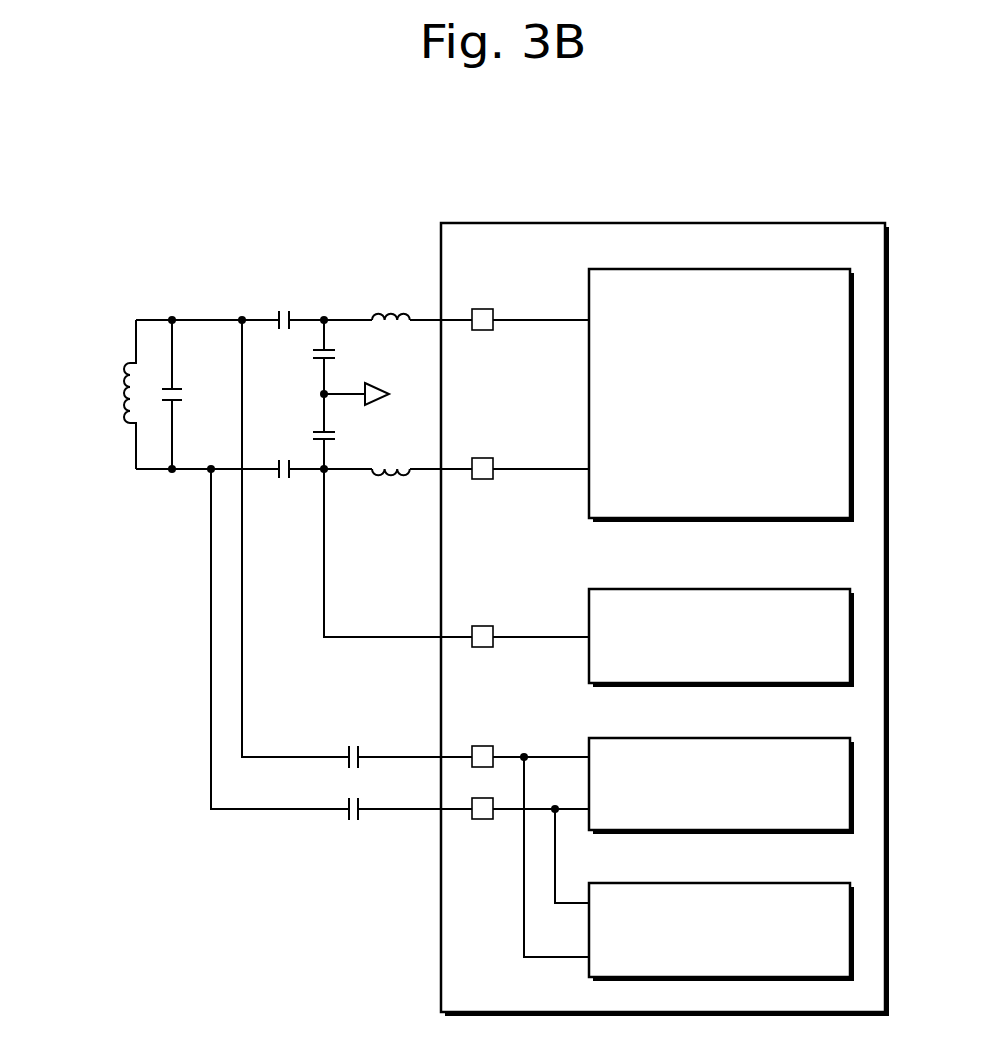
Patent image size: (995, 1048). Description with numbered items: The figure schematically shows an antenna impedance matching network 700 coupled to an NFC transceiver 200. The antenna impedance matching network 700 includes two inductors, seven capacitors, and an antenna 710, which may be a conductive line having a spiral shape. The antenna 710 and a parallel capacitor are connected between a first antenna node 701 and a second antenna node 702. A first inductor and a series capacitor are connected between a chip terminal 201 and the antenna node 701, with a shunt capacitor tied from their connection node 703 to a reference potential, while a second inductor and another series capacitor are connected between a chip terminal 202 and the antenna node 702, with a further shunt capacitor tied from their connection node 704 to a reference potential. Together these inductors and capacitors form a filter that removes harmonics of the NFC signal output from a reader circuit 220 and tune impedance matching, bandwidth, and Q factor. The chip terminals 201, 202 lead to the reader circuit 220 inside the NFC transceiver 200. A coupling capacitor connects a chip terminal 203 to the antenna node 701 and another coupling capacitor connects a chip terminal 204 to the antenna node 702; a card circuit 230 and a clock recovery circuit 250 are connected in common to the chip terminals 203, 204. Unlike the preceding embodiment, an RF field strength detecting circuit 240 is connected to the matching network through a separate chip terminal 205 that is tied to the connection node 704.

The antenna impedance matching network 700 is at (138, 268).
The antenna 710 is at (126, 352).
The antenna node 701 is at (172, 318).
The antenna node 702 is at (172, 472).
The connection node 703 is at (324, 318).
The connection node 704 is at (324, 472).
The NFC transceiver 200 is at (695, 222).
The chip terminal 201 is at (485, 308).
The chip terminal 202 is at (485, 458).
The chip terminal 203 is at (484, 746).
The chip terminal 204 is at (482, 822).
The chip terminal 205 is at (484, 625).
The reader circuit 220 is at (763, 268).
The RF field strength detecting circuit 240 is at (763, 589).
The clock recovery circuit 250 is at (763, 738).
The card circuit 230 is at (763, 883).